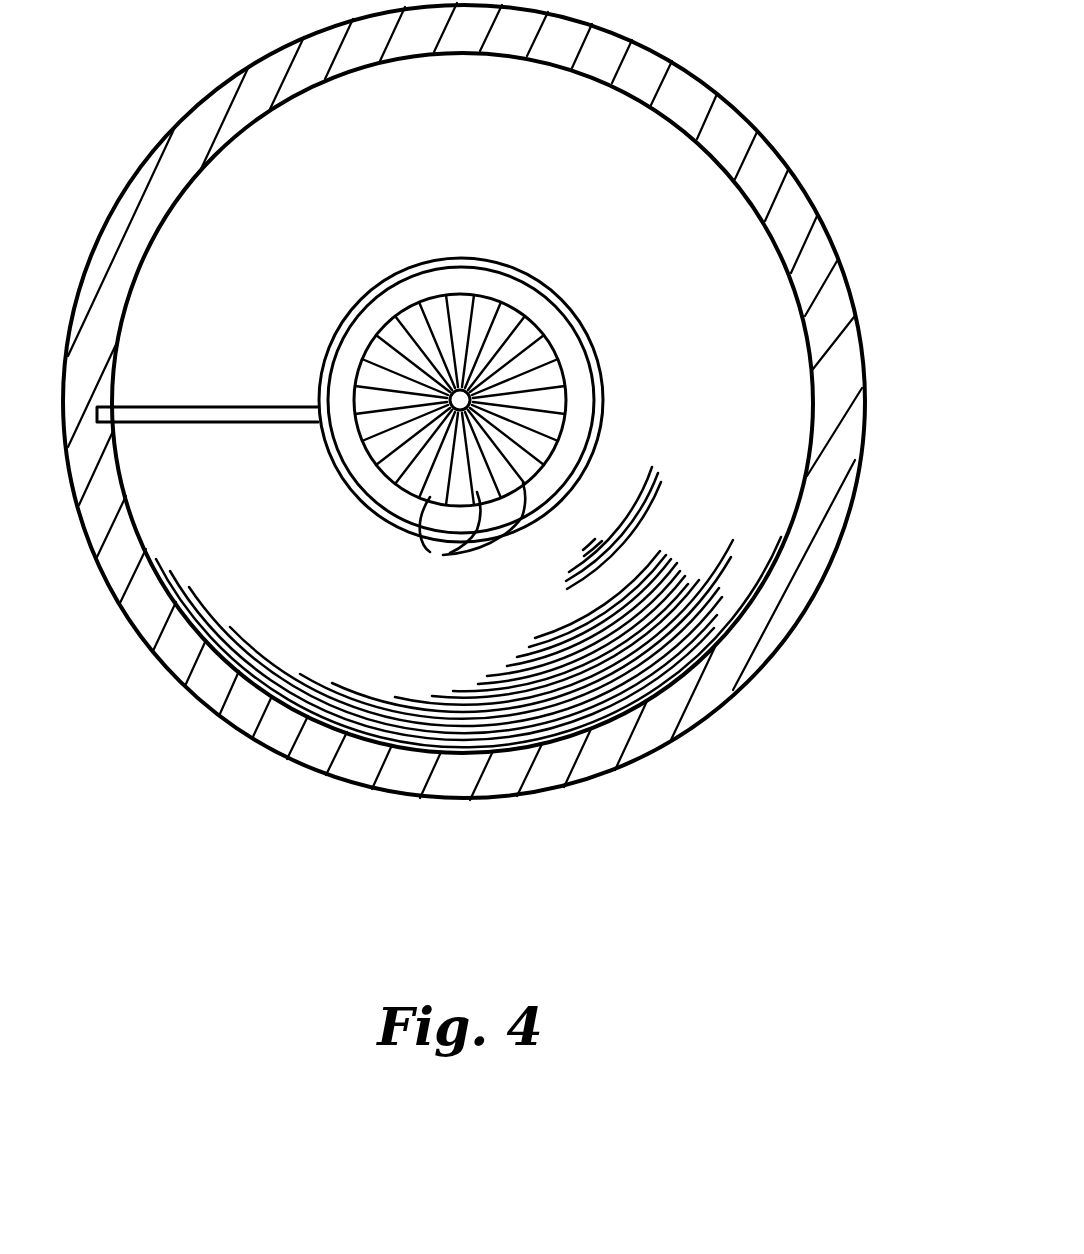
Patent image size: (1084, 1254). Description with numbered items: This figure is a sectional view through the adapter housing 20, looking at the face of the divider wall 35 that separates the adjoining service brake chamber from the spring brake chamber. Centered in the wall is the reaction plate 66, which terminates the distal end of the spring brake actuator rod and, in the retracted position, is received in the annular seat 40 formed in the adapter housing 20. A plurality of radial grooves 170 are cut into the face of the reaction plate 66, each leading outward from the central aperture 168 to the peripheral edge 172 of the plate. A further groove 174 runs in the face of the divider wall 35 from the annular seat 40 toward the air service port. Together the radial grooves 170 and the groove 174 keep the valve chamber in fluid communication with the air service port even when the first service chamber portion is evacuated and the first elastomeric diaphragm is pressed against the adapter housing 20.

The adapter housing 20 is at (775, 150).
The divider wall 35 is at (722, 517).
The annular seat 40 is at (580, 423).
The reaction plate 66 is at (513, 362).
The central aperture 168 is at (452, 405).
The radial grooves 170 is at (450, 556).
The peripheral edge 172 is at (503, 302).
The groove 174 is at (238, 423).